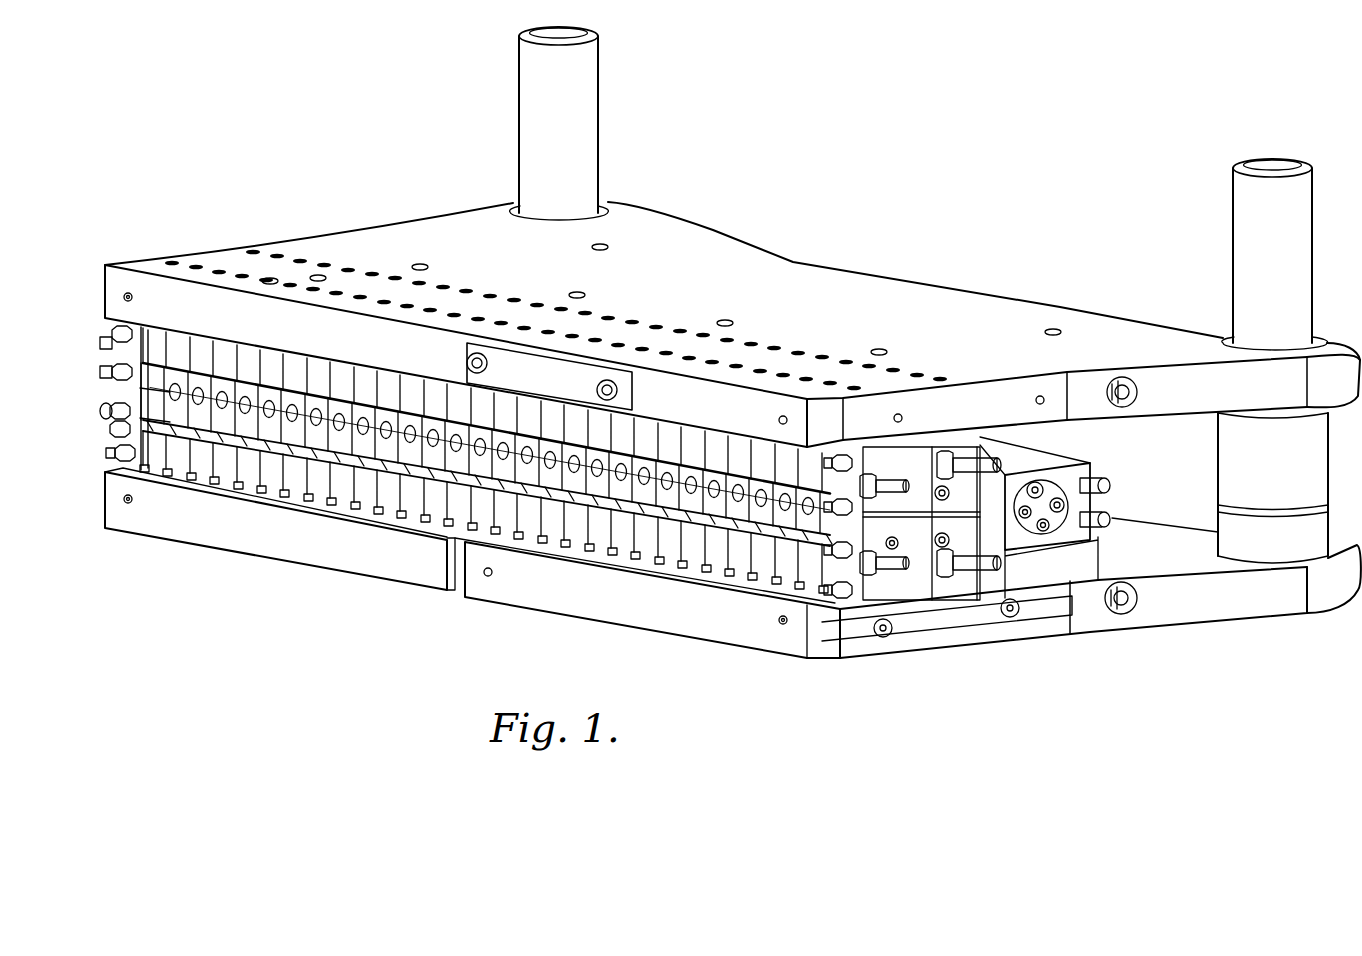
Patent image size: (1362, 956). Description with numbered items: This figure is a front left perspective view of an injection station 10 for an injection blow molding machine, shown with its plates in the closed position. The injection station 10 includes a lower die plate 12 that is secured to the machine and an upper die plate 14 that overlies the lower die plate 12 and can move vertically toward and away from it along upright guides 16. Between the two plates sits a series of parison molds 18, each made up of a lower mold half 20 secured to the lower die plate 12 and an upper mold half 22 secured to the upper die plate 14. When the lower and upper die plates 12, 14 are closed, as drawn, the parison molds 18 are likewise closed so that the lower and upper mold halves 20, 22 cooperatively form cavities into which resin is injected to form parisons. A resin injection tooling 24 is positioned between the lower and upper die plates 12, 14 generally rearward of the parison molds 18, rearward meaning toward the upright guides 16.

The injection station 10 is at (343, 106).
The lower die plate 12 is at (781, 637).
The upper die plate 14 is at (153, 262).
The upright guides 16 is at (585, 102).
The parison molds 18 is at (577, 523).
The lower mold half 20 is at (323, 487).
The upper mold half 22 is at (272, 360).
The resin injection tooling 24 is at (1140, 502).